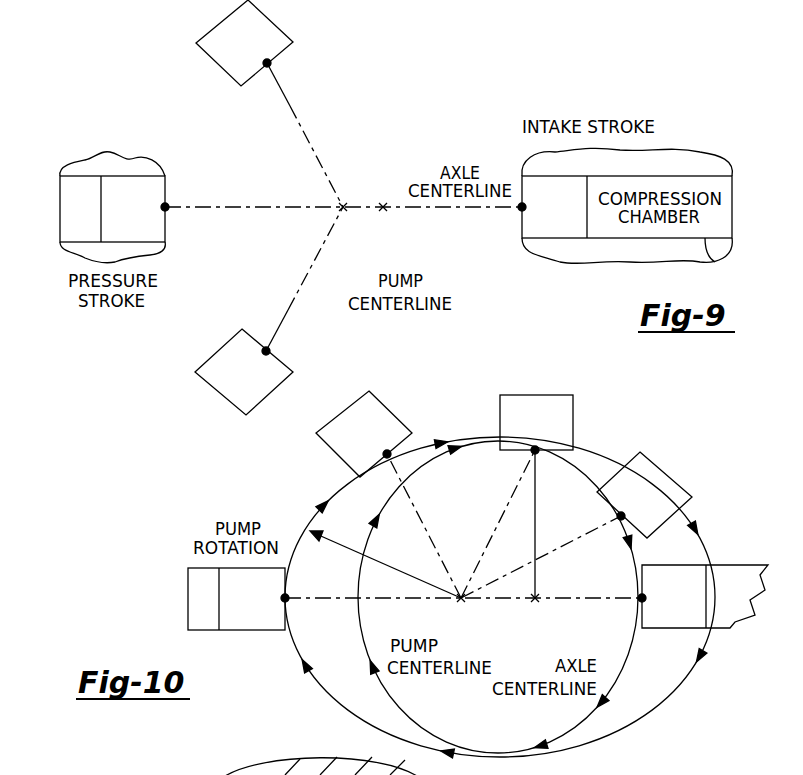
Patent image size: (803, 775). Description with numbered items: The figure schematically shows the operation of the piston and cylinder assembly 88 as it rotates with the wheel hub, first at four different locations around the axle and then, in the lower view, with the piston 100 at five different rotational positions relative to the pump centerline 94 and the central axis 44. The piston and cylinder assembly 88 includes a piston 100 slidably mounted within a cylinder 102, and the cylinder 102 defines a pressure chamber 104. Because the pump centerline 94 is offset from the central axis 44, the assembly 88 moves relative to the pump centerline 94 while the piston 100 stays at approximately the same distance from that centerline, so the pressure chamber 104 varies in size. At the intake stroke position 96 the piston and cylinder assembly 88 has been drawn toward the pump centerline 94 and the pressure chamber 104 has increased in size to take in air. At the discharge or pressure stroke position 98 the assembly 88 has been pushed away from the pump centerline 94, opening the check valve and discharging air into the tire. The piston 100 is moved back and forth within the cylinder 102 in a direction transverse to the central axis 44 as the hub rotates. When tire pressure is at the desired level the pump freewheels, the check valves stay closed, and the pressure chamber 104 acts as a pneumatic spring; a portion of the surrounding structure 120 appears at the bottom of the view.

In FIG. 9, the central axis 44 is at (383, 204).
In FIG. 10, the central axis 44 is at (535, 600).
In FIG. 9, the piston and cylinder assembly 88 is at (252, 50).
In FIG. 9, the pump centerline 94 is at (345, 210).
In FIG. 10, the pump centerline 94 is at (461, 600).
In FIG. 9, the intake stroke position 96 is at (685, 133).
In FIG. 9, the pressure stroke position 98 is at (52, 182).
In FIG. 9, the piston 100 is at (158, 227).
In FIG. 10, the piston 100 is at (266, 618).
In FIG. 9, the cylinder 102 is at (715, 262).
In FIG. 9, the pressure chamber 104 is at (65, 232).
In FIG. 10, the pressure chamber 104 is at (200, 580).
In FIG. 10, the pump housing 120 is at (270, 766).